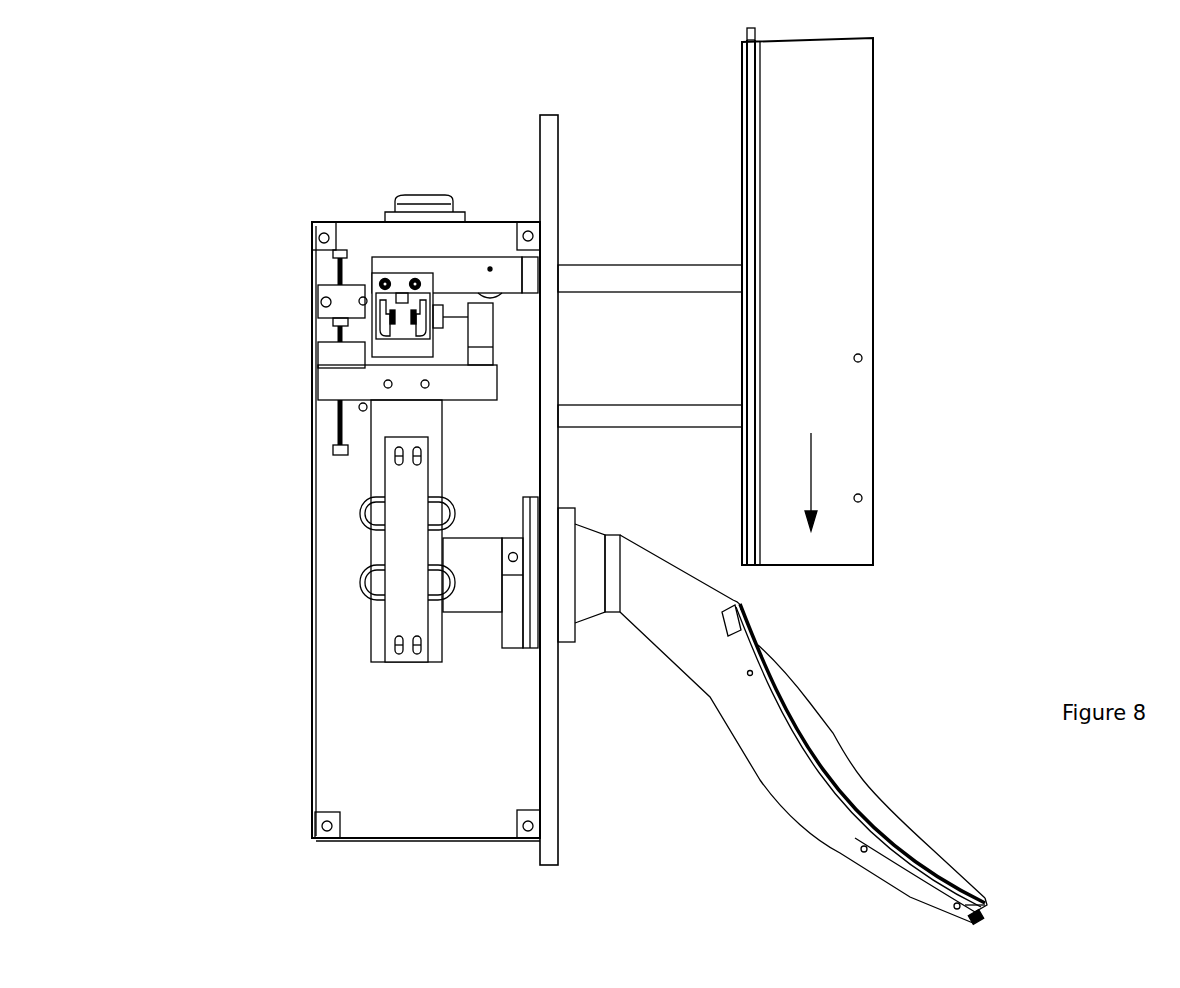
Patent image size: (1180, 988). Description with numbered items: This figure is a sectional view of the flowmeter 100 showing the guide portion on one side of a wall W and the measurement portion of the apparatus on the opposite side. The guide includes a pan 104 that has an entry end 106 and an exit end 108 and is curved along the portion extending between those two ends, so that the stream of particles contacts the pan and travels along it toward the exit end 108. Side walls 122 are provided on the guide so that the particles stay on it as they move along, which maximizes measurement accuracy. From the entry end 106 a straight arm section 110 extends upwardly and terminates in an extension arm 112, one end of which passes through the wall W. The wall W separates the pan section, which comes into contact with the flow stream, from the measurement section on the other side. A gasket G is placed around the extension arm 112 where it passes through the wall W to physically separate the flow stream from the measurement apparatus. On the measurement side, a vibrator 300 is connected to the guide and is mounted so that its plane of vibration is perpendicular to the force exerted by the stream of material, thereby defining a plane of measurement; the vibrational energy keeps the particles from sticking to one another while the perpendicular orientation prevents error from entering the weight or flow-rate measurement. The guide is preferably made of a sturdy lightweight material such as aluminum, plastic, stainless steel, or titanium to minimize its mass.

The flowmeter 100 is at (835, 729).
The pan 104 is at (855, 813).
The entry end 106 is at (782, 671).
The exit end 108 is at (988, 887).
The straight arm section 110 is at (663, 620).
The extension arm 112 is at (470, 603).
The side walls 122 is at (882, 827).
The vibrator 300 is at (398, 517).
The gasket G is at (575, 640).
The wall W is at (549, 852).